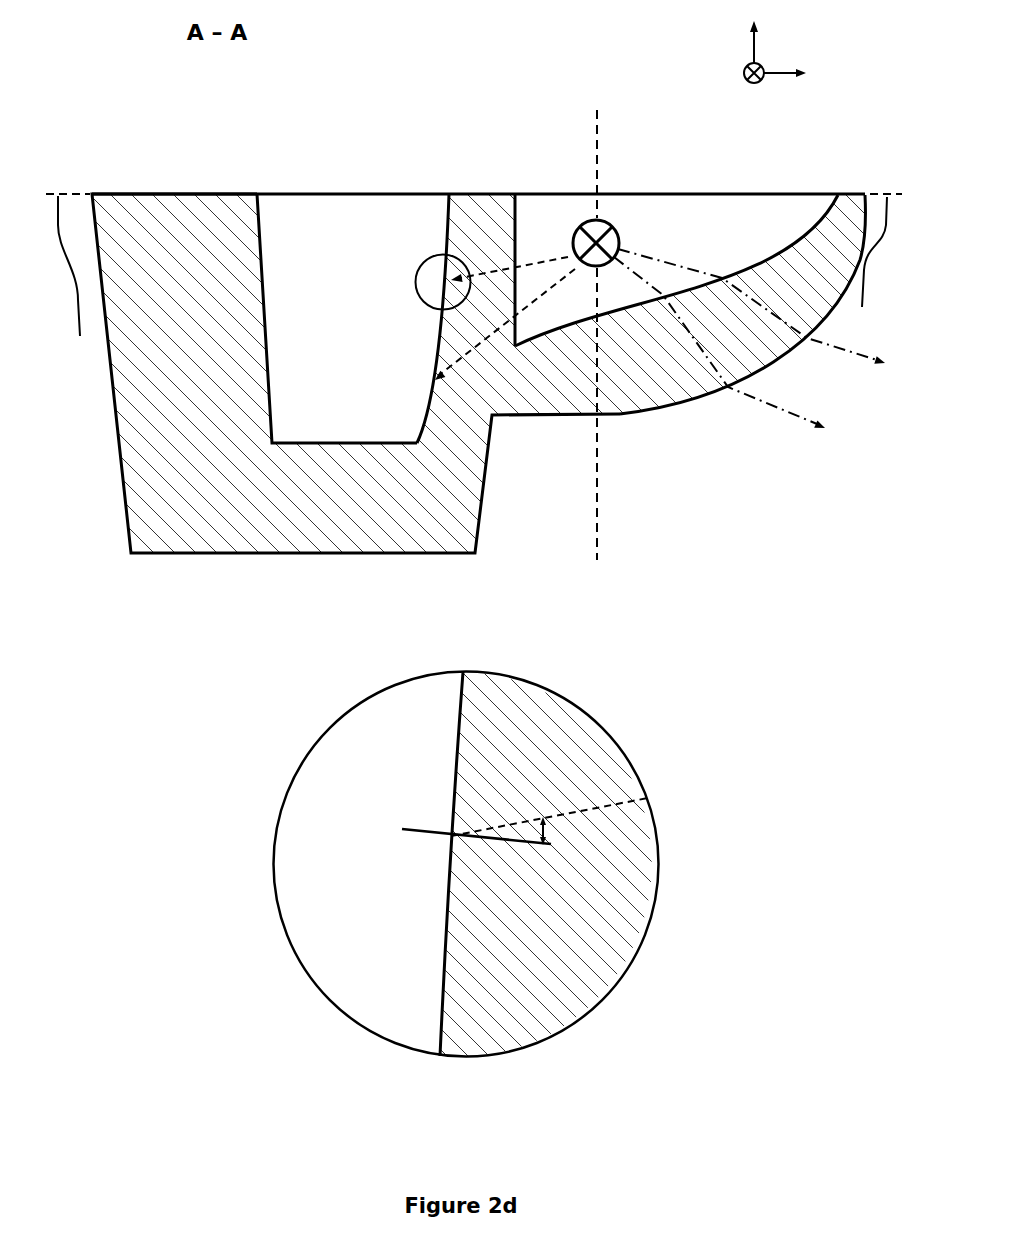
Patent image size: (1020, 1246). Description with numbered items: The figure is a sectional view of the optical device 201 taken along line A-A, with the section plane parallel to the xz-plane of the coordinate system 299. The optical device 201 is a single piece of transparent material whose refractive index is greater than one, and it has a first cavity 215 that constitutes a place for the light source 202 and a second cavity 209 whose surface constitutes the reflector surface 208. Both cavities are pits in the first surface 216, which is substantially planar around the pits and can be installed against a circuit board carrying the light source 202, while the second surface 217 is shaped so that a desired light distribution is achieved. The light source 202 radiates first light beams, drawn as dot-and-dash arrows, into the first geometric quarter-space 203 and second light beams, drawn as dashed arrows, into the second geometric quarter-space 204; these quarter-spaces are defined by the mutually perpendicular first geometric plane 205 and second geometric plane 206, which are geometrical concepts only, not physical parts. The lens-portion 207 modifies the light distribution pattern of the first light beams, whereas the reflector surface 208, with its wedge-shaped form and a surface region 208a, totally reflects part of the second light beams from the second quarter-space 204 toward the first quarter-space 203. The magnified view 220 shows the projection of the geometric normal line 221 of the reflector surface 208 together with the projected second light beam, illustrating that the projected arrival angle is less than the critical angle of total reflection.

The optical device 201 is at (173, 90).
The light source 202 is at (604, 221).
The first geometric quarter-space 203 is at (765, 494).
The second geometric quarter-space 204 is at (54, 437).
The first geometric plane 205 is at (599, 147).
The second geometric plane 206 is at (472, 279).
The lens-portion 207 is at (690, 346).
The reflector surface 208 is at (355, 264).
The wall surface 208a is at (378, 232).
The second cavity 209 is at (301, 328).
The first cavity 215 is at (684, 249).
The first surface 216 is at (180, 186).
The second surface 217 is at (691, 412).
The magnified view 220 is at (460, 669).
The projection of the geometric normal line 221 is at (430, 835).
The coordinate system 299 is at (769, 54).